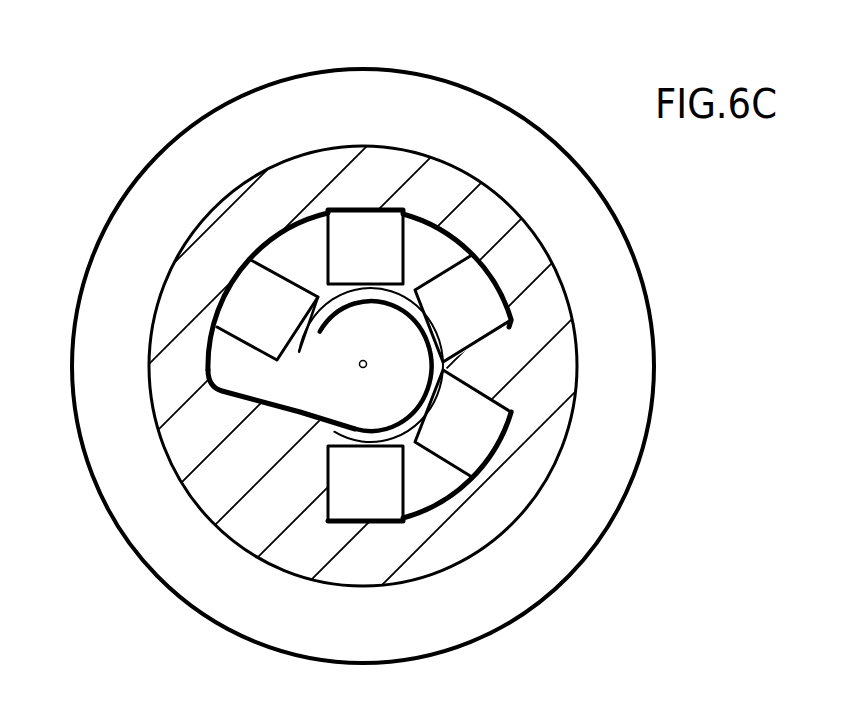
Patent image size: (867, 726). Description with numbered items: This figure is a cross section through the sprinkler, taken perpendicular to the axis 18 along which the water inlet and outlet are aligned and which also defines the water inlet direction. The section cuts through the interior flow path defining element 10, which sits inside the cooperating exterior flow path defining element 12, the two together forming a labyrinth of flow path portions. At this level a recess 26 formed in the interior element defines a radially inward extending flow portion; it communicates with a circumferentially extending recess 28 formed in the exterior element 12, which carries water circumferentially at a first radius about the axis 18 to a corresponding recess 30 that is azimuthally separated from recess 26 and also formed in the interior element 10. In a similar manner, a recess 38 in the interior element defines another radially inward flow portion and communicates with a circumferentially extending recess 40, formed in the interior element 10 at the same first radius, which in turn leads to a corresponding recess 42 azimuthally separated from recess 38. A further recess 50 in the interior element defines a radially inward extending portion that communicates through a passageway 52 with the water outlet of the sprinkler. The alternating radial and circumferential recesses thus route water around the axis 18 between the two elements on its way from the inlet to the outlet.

The interior flow path defining element 10 is at (408, 366).
The exterior flow path defining element 12 is at (102, 507).
The axis 18 is at (360, 365).
The recess 26 is at (375, 500).
The circumferentially extending recess 28 is at (428, 480).
The recess 30 is at (483, 432).
The recess 38 is at (483, 298).
The circumferentially extending recess 40 is at (432, 250).
The recess 42 is at (360, 242).
The recess 50 is at (267, 308).
The passageway 52 is at (235, 372).